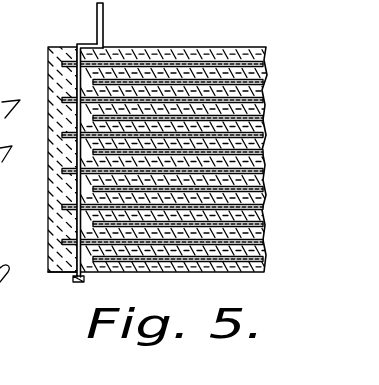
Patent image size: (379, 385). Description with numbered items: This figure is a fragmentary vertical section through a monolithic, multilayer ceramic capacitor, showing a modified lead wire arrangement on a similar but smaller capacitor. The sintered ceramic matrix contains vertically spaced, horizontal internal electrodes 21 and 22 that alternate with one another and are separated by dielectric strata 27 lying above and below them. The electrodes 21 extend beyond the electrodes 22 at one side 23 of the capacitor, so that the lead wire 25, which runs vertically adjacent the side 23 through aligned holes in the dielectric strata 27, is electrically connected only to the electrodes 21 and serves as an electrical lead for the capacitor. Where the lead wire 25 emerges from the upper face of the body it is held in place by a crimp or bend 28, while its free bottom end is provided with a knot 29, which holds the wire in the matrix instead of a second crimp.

The internal electrodes 21 is at (270, 205).
The internal electrodes 22 is at (268, 150).
The side of the capacitor 23 is at (40, 81).
The lead wire 25 is at (104, 14).
The dielectric strata 27 is at (268, 84).
The crimps or bends 28 is at (97, 45).
The knots 29 is at (79, 279).